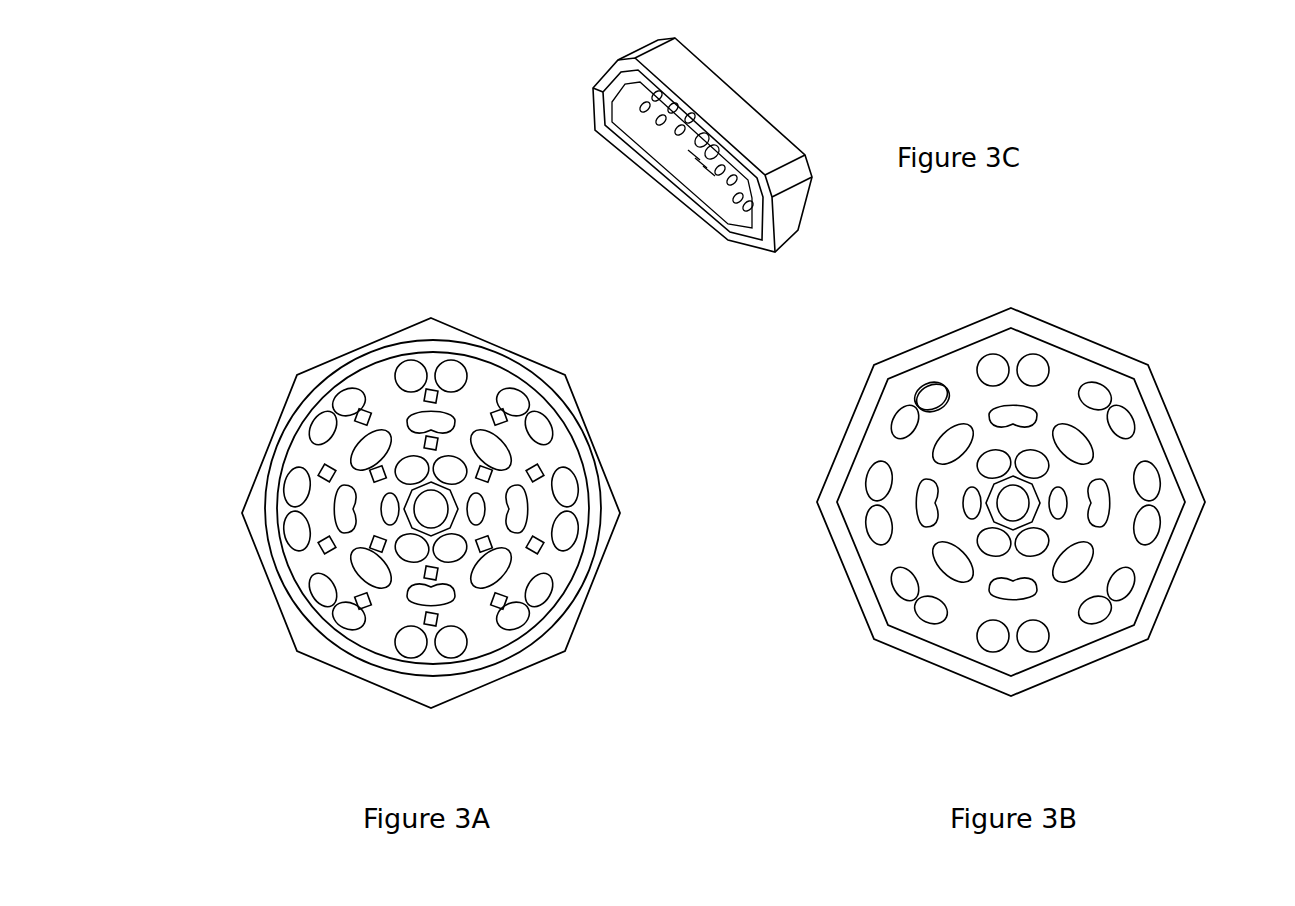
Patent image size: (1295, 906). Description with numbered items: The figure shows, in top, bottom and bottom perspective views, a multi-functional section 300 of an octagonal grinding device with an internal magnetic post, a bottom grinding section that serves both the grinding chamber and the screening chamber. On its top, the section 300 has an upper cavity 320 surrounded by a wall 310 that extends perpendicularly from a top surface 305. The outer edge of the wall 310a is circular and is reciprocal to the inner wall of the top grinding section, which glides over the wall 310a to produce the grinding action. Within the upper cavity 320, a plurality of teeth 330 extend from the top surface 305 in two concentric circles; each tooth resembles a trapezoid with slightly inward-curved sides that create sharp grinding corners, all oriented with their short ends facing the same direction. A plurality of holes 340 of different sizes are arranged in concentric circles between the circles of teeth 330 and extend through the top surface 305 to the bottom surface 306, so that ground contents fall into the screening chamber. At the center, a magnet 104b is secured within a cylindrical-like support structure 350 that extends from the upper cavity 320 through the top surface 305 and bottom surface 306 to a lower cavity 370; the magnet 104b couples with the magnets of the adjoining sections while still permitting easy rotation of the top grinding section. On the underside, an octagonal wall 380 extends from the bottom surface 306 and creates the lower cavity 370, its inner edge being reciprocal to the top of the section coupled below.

In FIG. 3A, the multi-functional section 300 is at (272, 60).
In FIG. 3A, the top surface 305 is at (432, 330).
In FIG. 3B, the bottom surface 306 is at (963, 398).
In FIG. 3C, the bottom surface 306 is at (670, 147).
In FIG. 3A, the wall 310 is at (307, 413).
In FIG. 3A, the outer edge of the wall 310a is at (263, 504).
In FIG. 3A, the upper cavity 320 is at (412, 411).
In FIG. 3A, the plurality of teeth 330 is at (420, 573).
In FIG. 3A, the plurality of holes 340 is at (500, 443).
In FIG. 3B, the plurality of holes 340 is at (945, 448).
In FIG. 3A, the cylindrical-like support structure 350 is at (443, 530).
In FIG. 3B, the cylindrical-like support structure 350 is at (1007, 532).
In FIG. 3A, the magnet 104b is at (435, 508).
In FIG. 3B, the magnet 104b is at (1015, 505).
In FIG. 3B, the lower cavity 370 is at (962, 352).
In FIG. 3C, the lower cavity 370 is at (697, 210).
In FIG. 3B, the octagonal wall 380 is at (1152, 612).